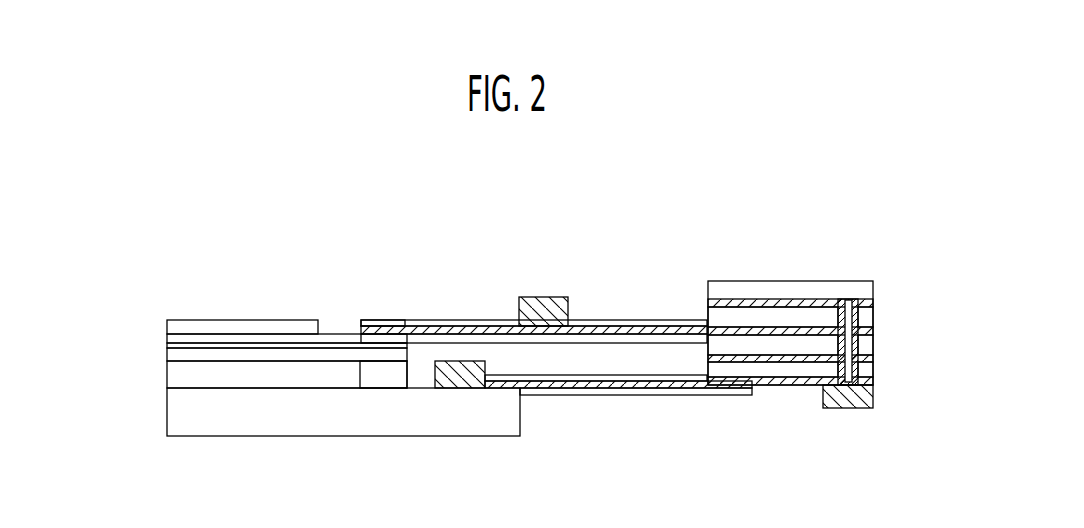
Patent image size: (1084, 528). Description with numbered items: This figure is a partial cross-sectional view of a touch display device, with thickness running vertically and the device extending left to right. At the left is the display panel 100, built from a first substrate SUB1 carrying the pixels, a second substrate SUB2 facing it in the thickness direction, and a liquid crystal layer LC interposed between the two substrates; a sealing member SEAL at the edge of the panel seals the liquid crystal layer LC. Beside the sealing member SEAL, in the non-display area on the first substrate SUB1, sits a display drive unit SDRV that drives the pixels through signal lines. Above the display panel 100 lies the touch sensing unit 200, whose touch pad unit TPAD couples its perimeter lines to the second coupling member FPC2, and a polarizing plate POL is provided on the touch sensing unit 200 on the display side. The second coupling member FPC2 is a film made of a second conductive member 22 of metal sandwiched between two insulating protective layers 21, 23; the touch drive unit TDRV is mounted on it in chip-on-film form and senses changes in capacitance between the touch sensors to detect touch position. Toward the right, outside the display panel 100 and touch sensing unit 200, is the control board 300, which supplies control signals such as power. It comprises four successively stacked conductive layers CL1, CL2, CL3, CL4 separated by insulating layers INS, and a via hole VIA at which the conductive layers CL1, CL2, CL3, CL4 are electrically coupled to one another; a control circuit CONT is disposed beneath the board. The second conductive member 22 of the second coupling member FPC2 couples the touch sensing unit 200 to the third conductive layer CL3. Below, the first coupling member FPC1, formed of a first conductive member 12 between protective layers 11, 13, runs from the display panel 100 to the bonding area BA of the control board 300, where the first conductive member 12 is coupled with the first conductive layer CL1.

The display panel 100 is at (108, 355).
The first substrate SUB1 is at (175, 413).
The second substrate SUB2 is at (170, 356).
The liquid crystal layer LC is at (175, 377).
The touch sensing unit 200 is at (170, 339).
The polarizing plate POL is at (180, 329).
The sealing member SEAL is at (384, 380).
The display drive unit SDRV is at (456, 376).
The touch pad unit TPAD is at (404, 316).
The touch drive unit TDRV is at (536, 303).
The second coupling member FPC2 is at (674, 262).
The protective layer 21 is at (604, 326).
The second conductive member 22 is at (630, 332).
The protective layer 23 is at (657, 339).
The first coupling member FPC1 is at (674, 452).
The protective layer 11 is at (605, 393).
The first conductive member 12 is at (629, 385).
The protective layer 13 is at (655, 379).
The bonding area BA is at (752, 399).
The control board 300 is at (757, 271).
The first conductive layer CL1 is at (872, 382).
The second conductive layer CL2 is at (872, 358).
The third conductive layer CL3 is at (872, 331).
The fourth conductive layer CL4 is at (872, 303).
The insulating layer INS is at (872, 368).
The via hole VIA is at (848, 312).
The control circuit CONT is at (846, 402).